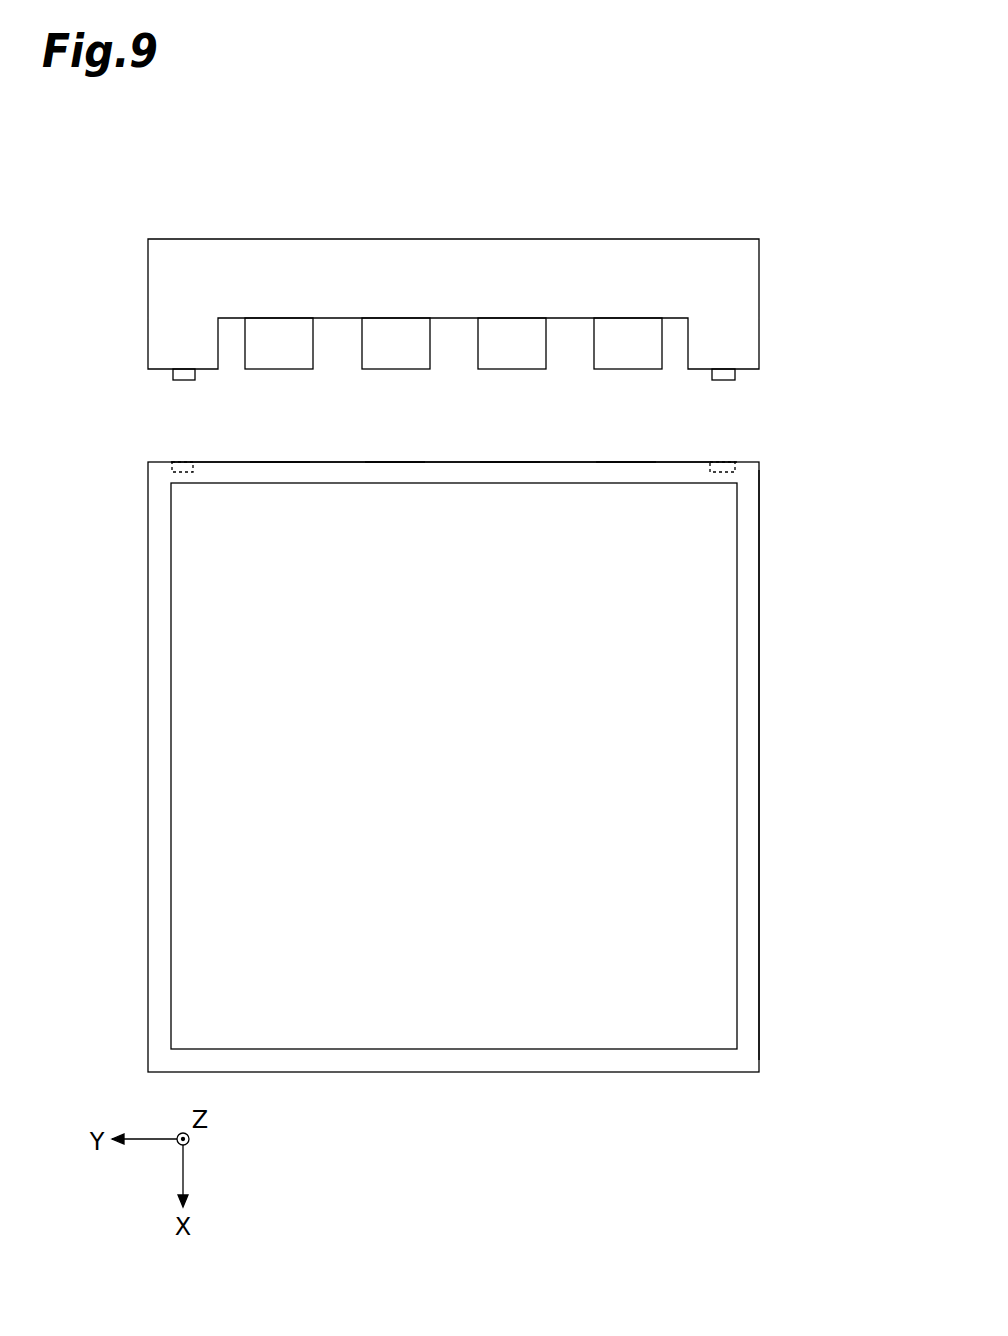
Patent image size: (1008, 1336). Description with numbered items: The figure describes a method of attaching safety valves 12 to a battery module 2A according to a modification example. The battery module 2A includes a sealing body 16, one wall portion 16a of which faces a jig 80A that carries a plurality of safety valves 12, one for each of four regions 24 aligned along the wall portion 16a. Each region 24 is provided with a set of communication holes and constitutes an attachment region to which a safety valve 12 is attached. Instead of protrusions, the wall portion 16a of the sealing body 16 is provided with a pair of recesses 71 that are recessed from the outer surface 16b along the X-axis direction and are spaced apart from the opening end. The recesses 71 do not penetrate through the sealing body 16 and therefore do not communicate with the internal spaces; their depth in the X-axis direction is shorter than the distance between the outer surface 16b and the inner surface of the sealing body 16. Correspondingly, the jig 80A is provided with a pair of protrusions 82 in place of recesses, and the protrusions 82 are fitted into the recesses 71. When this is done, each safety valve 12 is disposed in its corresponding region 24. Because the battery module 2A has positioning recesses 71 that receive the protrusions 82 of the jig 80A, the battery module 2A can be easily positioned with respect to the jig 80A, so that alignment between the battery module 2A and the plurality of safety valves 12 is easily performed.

The safety valve 12 is at (280, 333).
The region 24 is at (278, 462).
The sealing body 16 is at (748, 845).
The wall portion 16a is at (228, 462).
The outer surface 16b is at (759, 540).
The battery module 2A is at (770, 640).
The recess 71 is at (183, 460).
The jig 80A is at (759, 287).
The protrusion 82 is at (173, 376).